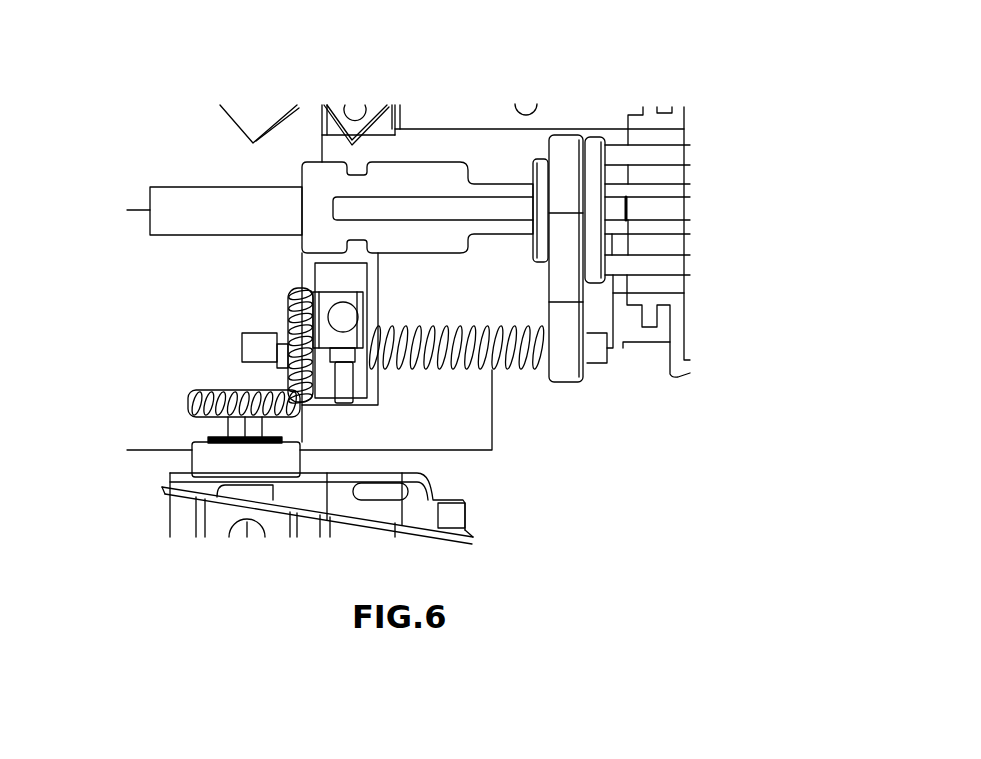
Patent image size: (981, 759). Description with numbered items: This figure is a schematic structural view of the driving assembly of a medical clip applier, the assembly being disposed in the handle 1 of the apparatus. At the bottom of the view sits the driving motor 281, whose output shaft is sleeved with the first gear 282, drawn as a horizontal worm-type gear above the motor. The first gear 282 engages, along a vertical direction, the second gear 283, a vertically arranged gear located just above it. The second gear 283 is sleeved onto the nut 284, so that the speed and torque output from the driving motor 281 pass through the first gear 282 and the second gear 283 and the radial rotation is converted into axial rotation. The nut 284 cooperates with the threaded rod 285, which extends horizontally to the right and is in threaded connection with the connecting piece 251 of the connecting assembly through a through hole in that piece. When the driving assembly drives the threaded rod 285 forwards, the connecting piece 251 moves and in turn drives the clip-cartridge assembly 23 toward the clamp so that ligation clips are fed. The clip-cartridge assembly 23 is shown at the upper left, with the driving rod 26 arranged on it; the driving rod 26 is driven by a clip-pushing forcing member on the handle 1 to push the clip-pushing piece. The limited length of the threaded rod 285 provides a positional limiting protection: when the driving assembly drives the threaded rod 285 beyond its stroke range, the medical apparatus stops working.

The handle 1 is at (438, 516).
The clip-cartridge assembly 23 is at (262, 200).
The driving rod 26 is at (413, 172).
The connecting piece 251 is at (578, 153).
The driving motor 281 is at (210, 462).
The first gear 282 is at (207, 418).
The second gear 283 is at (243, 335).
The nut 284 is at (327, 373).
The threaded rod 285 is at (513, 368).